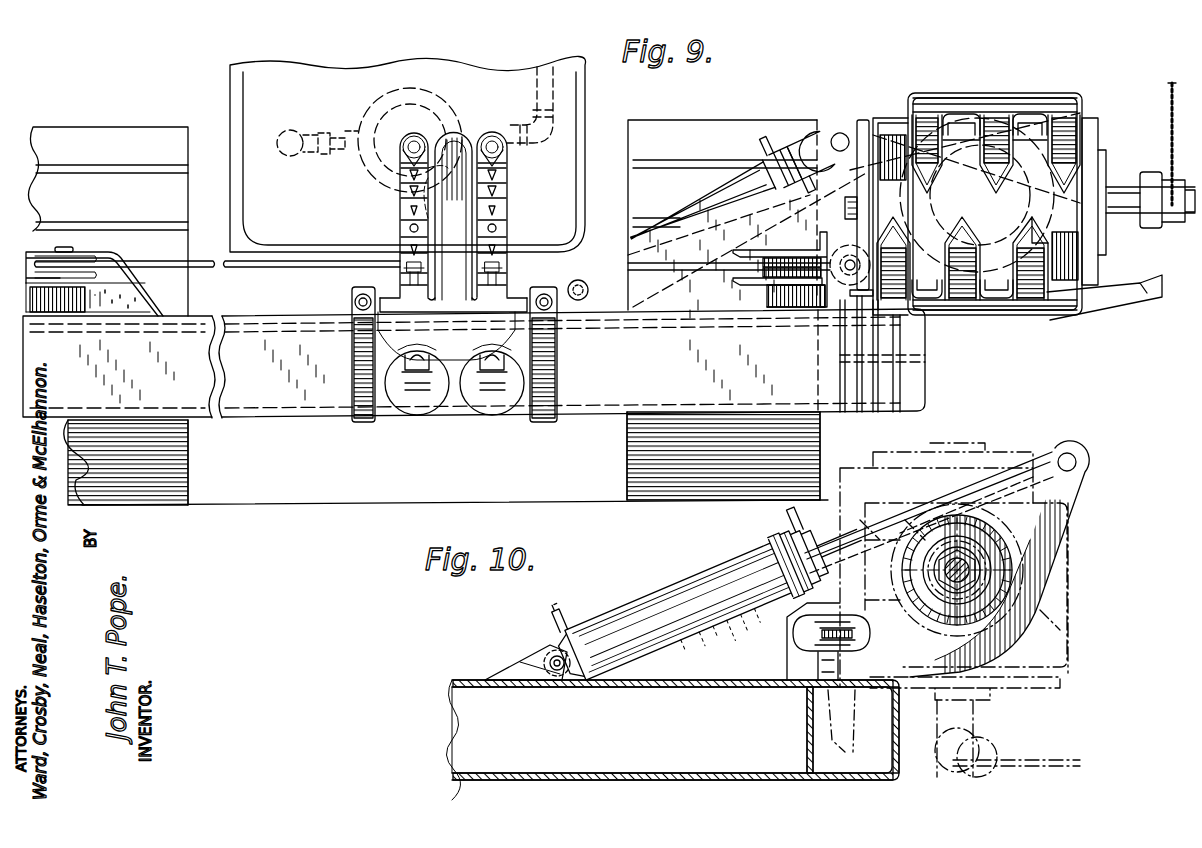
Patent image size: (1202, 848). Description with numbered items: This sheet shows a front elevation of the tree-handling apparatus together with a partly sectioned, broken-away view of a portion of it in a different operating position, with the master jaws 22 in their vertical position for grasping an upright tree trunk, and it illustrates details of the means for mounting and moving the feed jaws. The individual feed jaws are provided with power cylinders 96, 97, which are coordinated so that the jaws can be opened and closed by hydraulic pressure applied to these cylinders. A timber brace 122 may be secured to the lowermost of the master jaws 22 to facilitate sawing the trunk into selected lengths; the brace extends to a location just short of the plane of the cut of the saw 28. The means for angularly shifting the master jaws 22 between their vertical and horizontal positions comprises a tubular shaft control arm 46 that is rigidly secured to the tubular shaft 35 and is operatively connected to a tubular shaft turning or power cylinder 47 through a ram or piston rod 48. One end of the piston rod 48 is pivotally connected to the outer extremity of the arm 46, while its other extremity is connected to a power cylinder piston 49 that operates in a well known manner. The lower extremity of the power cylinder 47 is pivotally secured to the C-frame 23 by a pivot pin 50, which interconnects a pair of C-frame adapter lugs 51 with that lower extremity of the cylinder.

In FIG. 9, the master jaws 22 is at (975, 92).
In FIG. 9, the saw 28 is at (1170, 110).
In FIG. 9, the timber brace 122 is at (1118, 300).
In FIG. 9, the power cylinder 96 is at (417, 418).
In FIG. 9, the power cylinder 97 is at (492, 418).
In FIG. 10, the C-frame 23 is at (455, 685).
In FIG. 10, the tubular shaft 35 is at (1010, 580).
In FIG. 10, the tubular shaft control arm 46 is at (1068, 492).
In FIG. 10, the tubular shaft turning or power cylinder 47 is at (667, 588).
In FIG. 10, the ram or piston rod 48 is at (1010, 470).
In FIG. 10, the power cylinder piston 49 is at (772, 600).
In FIG. 10, the pivot pin 50 is at (550, 655).
In FIG. 10, the C-frame adapter lugs 51 is at (530, 670).